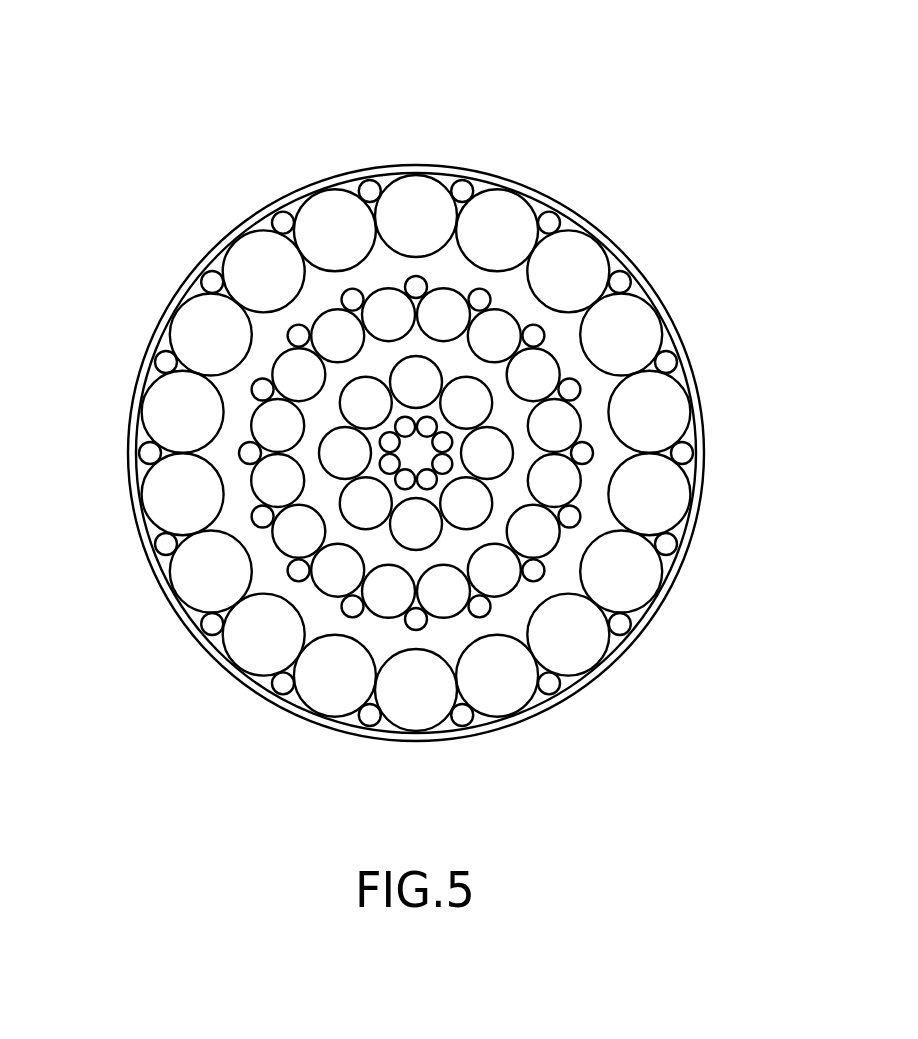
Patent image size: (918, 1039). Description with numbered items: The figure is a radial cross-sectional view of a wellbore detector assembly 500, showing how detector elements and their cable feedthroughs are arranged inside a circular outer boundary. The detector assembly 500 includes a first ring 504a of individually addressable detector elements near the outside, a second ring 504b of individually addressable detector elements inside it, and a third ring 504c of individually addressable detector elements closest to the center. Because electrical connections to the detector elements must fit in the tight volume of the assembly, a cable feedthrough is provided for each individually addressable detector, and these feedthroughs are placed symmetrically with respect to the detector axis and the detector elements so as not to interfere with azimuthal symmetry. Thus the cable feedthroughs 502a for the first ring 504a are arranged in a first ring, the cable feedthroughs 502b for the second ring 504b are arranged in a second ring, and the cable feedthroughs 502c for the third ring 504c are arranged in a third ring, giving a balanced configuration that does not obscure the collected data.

The detector assembly 500 is at (653, 125).
The first ring of individually addressable detector elements 504a is at (250, 272).
The cable feedthroughs for the first ring of detector elements 502a is at (625, 280).
The second ring of individually addressable detector elements 504b is at (298, 382).
The cable feedthroughs for the second ring of detector elements 502b is at (568, 388).
The third ring of individually addressable detector elements 504c is at (345, 457).
The cable feedthroughs for the third ring of detector elements 502c is at (441, 440).